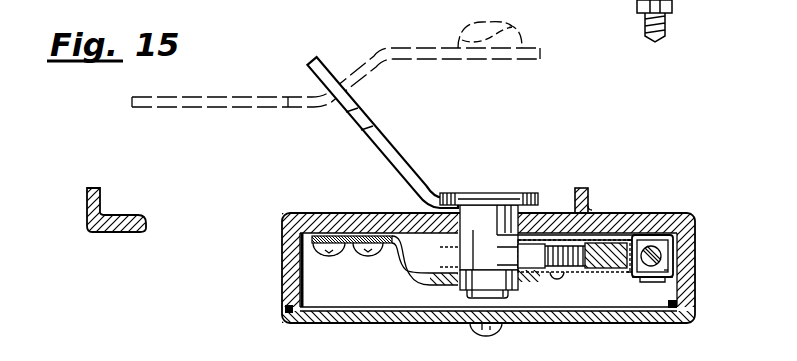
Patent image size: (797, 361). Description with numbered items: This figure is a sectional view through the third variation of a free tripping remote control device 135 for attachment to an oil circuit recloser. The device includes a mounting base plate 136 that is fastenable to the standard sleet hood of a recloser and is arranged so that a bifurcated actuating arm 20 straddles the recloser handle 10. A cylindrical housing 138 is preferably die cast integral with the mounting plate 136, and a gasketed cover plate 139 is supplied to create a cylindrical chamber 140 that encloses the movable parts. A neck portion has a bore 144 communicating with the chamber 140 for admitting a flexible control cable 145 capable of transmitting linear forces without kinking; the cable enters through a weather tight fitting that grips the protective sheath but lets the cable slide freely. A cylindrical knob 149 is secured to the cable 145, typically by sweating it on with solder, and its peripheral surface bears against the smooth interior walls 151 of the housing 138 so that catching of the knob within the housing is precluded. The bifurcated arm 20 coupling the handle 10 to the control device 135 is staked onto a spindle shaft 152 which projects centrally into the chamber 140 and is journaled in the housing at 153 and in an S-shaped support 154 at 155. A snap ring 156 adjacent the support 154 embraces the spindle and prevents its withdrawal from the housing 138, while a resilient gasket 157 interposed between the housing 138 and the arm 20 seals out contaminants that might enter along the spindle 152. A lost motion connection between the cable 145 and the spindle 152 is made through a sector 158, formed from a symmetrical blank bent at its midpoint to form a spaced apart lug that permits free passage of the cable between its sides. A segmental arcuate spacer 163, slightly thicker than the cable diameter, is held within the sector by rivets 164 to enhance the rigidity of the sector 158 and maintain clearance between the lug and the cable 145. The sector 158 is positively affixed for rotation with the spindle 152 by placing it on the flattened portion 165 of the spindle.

The recloser handle 10 is at (395, 47).
The bifurcated actuating arm 20 is at (395, 138).
The free tripping remote control device 135 is at (698, 288).
The mounting base plate 136 is at (87, 206).
The cylindrical housing 138 is at (288, 282).
The gasketed cover plate 139 is at (458, 315).
The cylindrical chamber 140 is at (367, 282).
The bore 144 is at (648, 282).
The flexible control cable 145 is at (670, 236).
The cylindrical knob 149 is at (667, 265).
The smooth interior walls 151 is at (302, 270).
The spindle shaft 152 is at (482, 252).
The housing journal 153 is at (540, 212).
The S-shaped support 154 is at (402, 258).
The support journal 155 is at (470, 288).
The snap ring 156 is at (509, 284).
The resilient gasket 157 is at (436, 208).
The sector 158 is at (600, 242).
The segmental arcuate spacer 163 is at (622, 272).
The rivets 164 is at (559, 279).
The flattened portion 165 is at (505, 255).